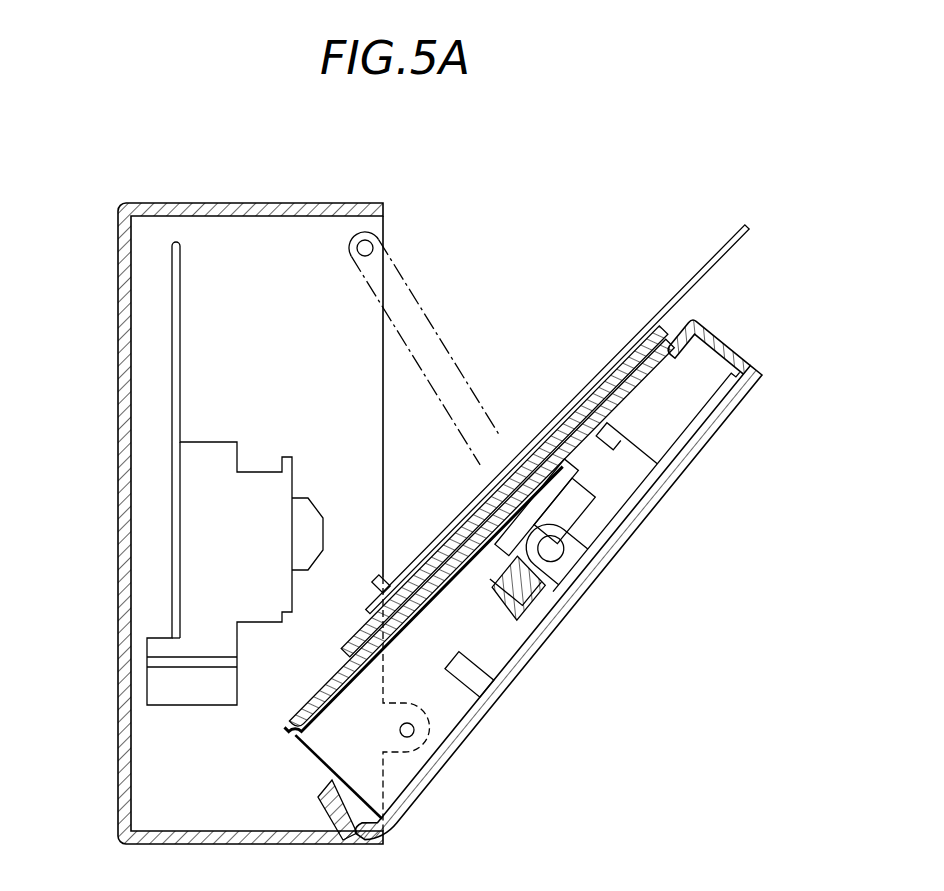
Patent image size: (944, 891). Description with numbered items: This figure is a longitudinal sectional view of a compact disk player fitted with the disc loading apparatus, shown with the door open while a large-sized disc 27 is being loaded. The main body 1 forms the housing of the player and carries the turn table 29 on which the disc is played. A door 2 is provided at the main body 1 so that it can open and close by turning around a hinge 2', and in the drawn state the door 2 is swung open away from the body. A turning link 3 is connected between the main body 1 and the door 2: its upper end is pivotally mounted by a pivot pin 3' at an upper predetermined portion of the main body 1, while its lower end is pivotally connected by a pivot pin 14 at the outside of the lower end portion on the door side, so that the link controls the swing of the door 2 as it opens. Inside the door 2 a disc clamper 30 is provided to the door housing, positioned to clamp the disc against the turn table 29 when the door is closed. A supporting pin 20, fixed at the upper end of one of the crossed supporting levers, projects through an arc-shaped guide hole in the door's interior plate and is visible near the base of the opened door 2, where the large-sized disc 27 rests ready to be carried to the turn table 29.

The main body 1 is at (116, 630).
The door 2 is at (542, 569).
The hinge 2' is at (459, 758).
The turning link 3 is at (425, 345).
The pivot pin 3' is at (402, 225).
The pivot pin 14 is at (563, 548).
The supporting pin 20 is at (384, 577).
The large-sized disc 27 is at (703, 267).
The turn table 29 is at (298, 502).
The disc clamper 30 is at (523, 578).